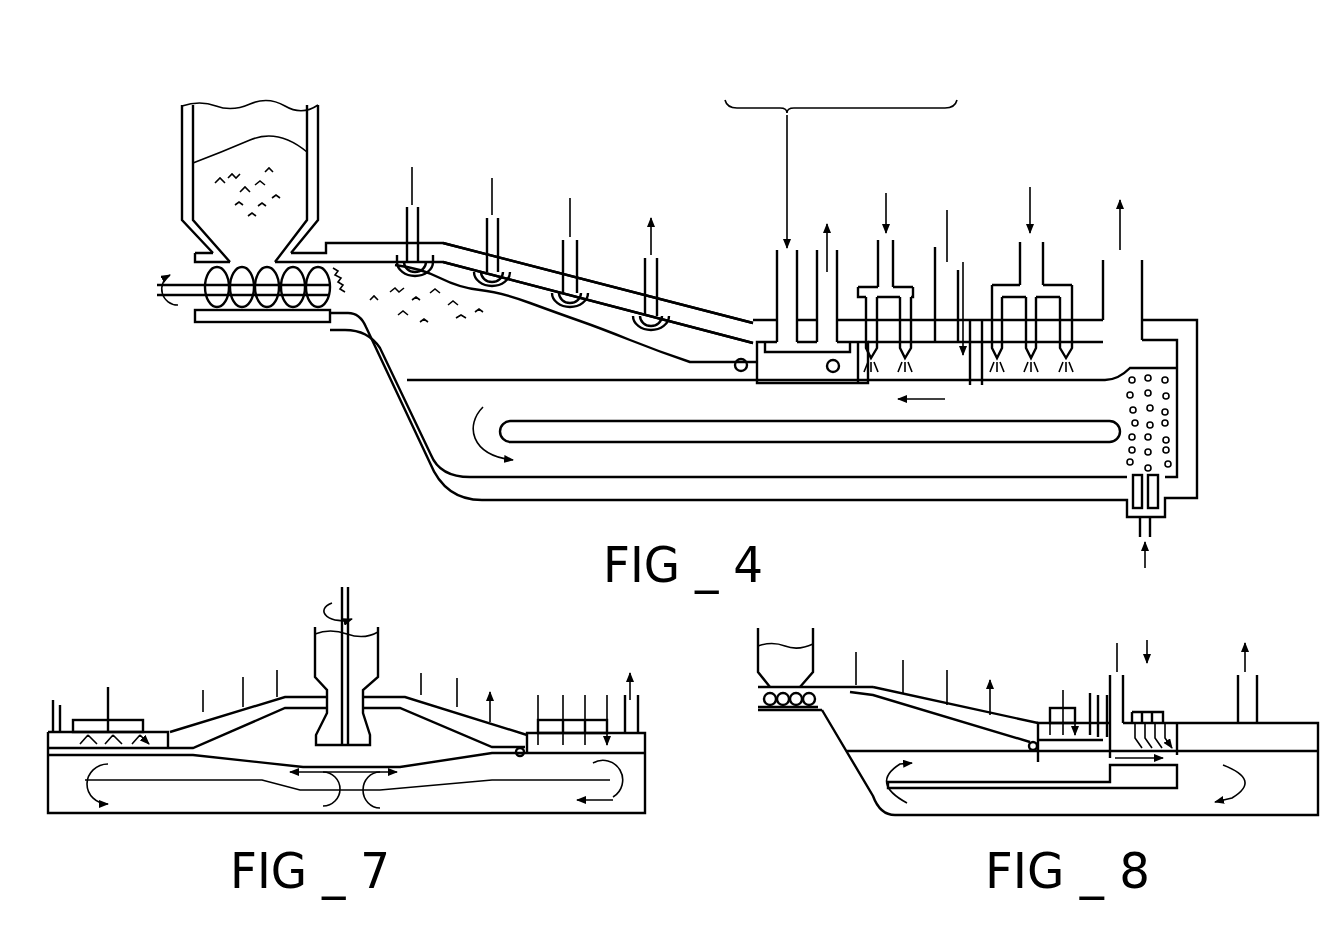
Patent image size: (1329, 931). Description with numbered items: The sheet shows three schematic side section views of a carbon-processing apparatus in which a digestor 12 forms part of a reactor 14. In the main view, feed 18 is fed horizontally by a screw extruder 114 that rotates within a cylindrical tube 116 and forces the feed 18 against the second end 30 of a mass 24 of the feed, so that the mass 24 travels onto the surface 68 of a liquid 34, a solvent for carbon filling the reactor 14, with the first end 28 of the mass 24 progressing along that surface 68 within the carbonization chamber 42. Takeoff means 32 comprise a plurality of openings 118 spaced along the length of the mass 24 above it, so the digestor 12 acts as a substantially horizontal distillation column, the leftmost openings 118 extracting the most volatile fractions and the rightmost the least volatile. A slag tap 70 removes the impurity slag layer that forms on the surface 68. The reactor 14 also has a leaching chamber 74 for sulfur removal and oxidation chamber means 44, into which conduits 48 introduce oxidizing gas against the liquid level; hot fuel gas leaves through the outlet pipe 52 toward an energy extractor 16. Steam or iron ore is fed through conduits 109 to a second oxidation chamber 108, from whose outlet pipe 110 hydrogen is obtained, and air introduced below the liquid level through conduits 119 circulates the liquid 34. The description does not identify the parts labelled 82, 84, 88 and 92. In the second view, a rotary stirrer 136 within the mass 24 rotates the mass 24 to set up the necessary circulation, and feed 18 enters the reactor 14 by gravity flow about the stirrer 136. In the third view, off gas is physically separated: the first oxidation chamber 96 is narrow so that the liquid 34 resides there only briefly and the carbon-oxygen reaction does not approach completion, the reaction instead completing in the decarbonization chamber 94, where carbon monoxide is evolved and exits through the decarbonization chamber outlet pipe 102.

In FIG. 4, the digestor 12 is at (540, 260).
In FIG. 4, the reactor 14 is at (712, 273).
In FIG. 7, the reactor 14 is at (650, 800).
In FIG. 4, the energy extractor 16 is at (1035, 251).
In FIG. 7, the energy extractor 16 is at (631, 682).
In FIG. 8, the energy extractor 16 is at (1181, 678).
In FIG. 4, the feed 18 is at (231, 140).
In FIG. 7, the feed 18 is at (352, 660).
In FIG. 8, the feed 18 is at (797, 640).
In FIG. 4, the mass 24 is at (440, 355).
In FIG. 7, the mass 24 is at (415, 755).
In FIG. 8, the mass 24 is at (862, 743).
In FIG. 4, the first end 28 is at (622, 350).
In FIG. 4, the second end 30 is at (339, 262).
In FIG. 4, the takeoff means 32 is at (491, 215).
In FIG. 4, the liquid 34 is at (773, 472).
In FIG. 7, the liquid 34 is at (175, 810).
In FIG. 8, the liquid 34 is at (1138, 811).
In FIG. 4, the carbonization chamber 42 is at (708, 343).
In FIG. 7, the carbonization chamber 42 is at (467, 717).
In FIG. 8, the carbonization chamber 42 is at (1013, 727).
In FIG. 4, the oxidation chamber means 44 is at (978, 335).
In FIG. 7, the oxidation chamber means 44 is at (630, 745).
In FIG. 4, the conduits 48 is at (1067, 323).
In FIG. 4, the takeoff pipe 52 is at (1145, 286).
In FIG. 4, the surface 68 is at (512, 378).
In FIG. 4, the slag tap 70 is at (735, 371).
In FIG. 7, the slag tap 70 is at (514, 755).
In FIG. 8, the slag tap 70 is at (1028, 748).
In FIG. 4, the leaching chamber 74 is at (810, 350).
In FIG. 7, the leaching chamber 74 is at (122, 737).
In FIG. 8, the leaching chamber 74 is at (1103, 737).
In FIG. 4, the distributor trough 82 is at (788, 366).
In FIG. 7, the distributor trough 82 is at (160, 732).
In FIG. 8, the distributor trough 82 is at (1070, 715).
In FIG. 4, the baffle 84 is at (837, 376).
In FIG. 4, the leach slag feed pipe 88 is at (774, 252).
In FIG. 4, the steam pipe 92 is at (818, 280).
In FIG. 7, the steam pipe 92 is at (60, 707).
In FIG. 8, the steam pipe 92 is at (1090, 700).
In FIG. 8, the decarbonization chamber 94 is at (1270, 748).
In FIG. 8, the first oxidation chamber 96 is at (1120, 738).
In FIG. 8, the decarbonization chamber outlet pipe 102 is at (1257, 695).
In FIG. 4, the second oxidation chamber 108 is at (900, 282).
In FIG. 4, the conduits 109 is at (904, 340).
In FIG. 4, the second oxidation chamber outlet pipe 110 is at (937, 300).
In FIG. 4, the screw extruder 114 is at (245, 293).
In FIG. 8, the screw extruder 114 is at (793, 707).
In FIG. 4, the cylindrical tube 116 is at (295, 305).
In FIG. 8, the cylindrical tube 116 is at (822, 712).
In FIG. 4, the openings 118 is at (545, 233).
In FIG. 7, the openings 118 is at (203, 715).
In FIG. 8, the openings 118 is at (940, 697).
In FIG. 4, the conduits 119 is at (1165, 478).
In FIG. 7, the rotary stirrer 136 is at (378, 677).